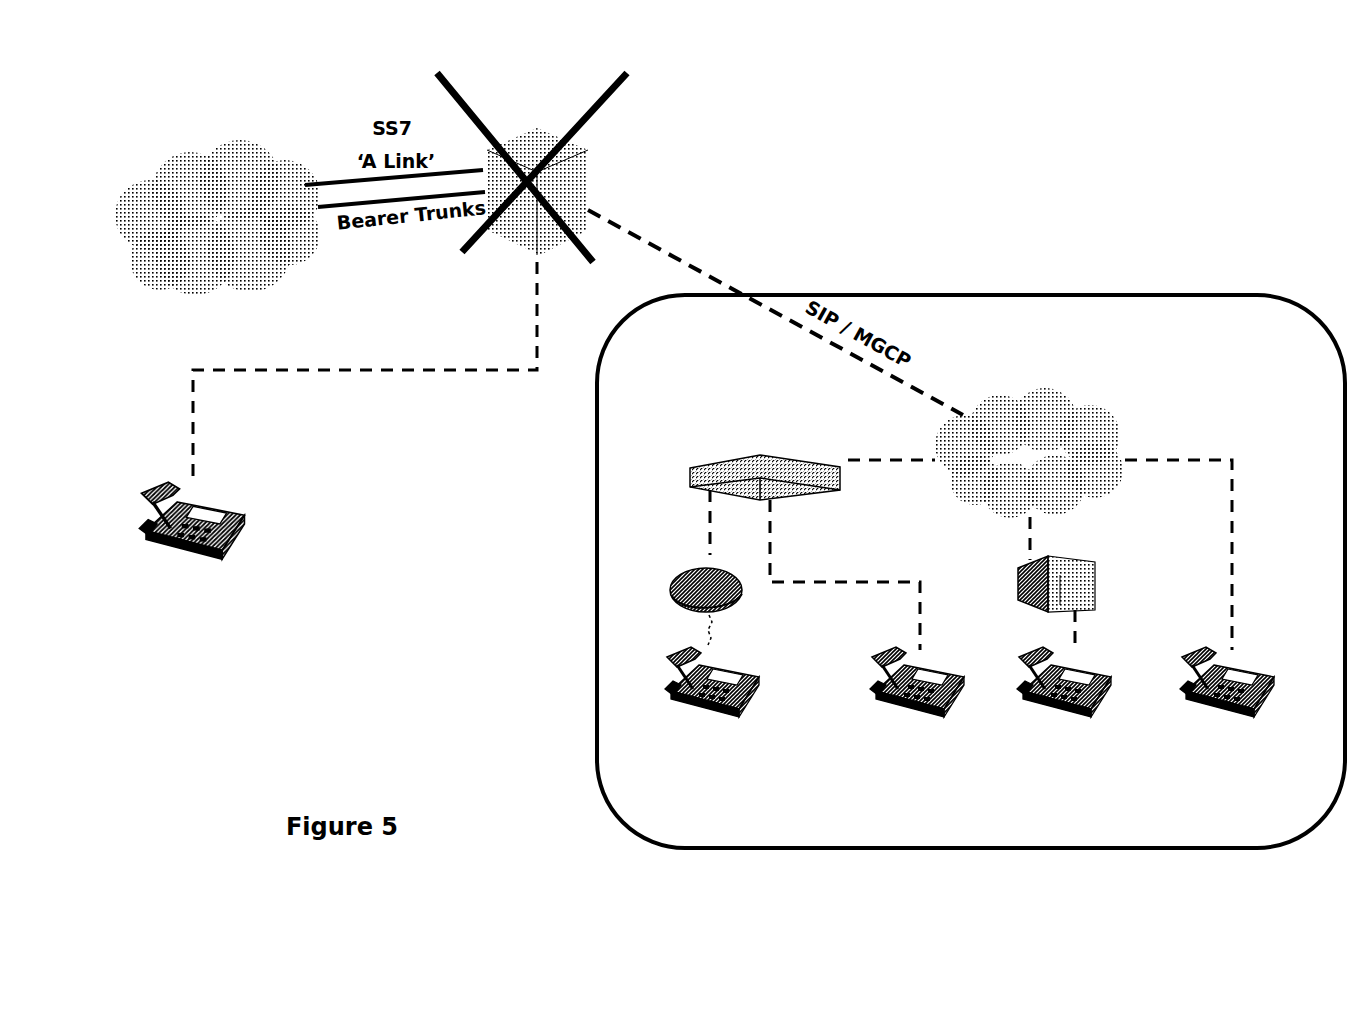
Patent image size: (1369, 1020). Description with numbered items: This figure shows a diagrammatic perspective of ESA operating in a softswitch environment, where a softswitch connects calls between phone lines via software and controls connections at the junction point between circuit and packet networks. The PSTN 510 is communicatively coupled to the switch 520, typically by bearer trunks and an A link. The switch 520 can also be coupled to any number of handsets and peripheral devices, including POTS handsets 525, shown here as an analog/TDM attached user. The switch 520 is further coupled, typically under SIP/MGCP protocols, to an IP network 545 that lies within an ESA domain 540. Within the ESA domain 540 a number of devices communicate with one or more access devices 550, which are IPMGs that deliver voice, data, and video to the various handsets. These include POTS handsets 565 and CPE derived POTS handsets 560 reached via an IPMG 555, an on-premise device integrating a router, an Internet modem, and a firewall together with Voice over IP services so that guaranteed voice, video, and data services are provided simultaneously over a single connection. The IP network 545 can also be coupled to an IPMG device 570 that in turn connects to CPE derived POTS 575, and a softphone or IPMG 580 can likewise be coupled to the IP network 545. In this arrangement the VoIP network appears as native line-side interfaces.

The PSTN 510 is at (217, 217).
The switch 520 is at (574, 183).
The POTS handsets 525 is at (245, 530).
The ESA domain 540 is at (1088, 295).
The IP network 545 is at (1029, 453).
The access devices 550 is at (692, 473).
The IPMG 555 is at (672, 600).
The CPE derived POTS handsets 560 is at (710, 732).
The POTS handsets 565 is at (917, 720).
The IPMG device 570 is at (1066, 588).
The CPE derived POTS 575 is at (1069, 744).
The softphone 580 is at (1230, 720).